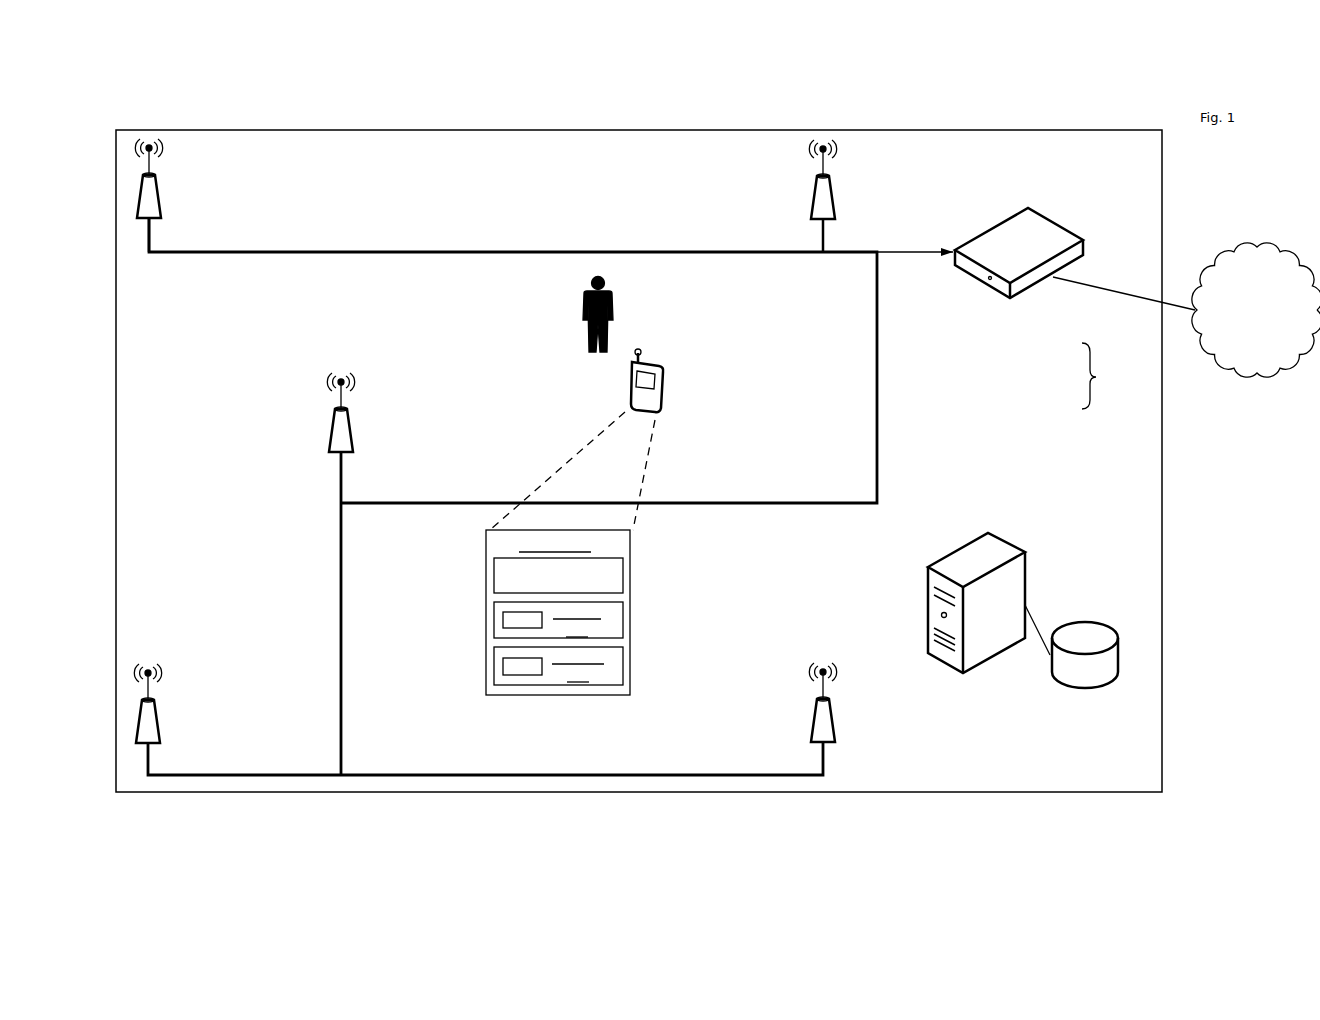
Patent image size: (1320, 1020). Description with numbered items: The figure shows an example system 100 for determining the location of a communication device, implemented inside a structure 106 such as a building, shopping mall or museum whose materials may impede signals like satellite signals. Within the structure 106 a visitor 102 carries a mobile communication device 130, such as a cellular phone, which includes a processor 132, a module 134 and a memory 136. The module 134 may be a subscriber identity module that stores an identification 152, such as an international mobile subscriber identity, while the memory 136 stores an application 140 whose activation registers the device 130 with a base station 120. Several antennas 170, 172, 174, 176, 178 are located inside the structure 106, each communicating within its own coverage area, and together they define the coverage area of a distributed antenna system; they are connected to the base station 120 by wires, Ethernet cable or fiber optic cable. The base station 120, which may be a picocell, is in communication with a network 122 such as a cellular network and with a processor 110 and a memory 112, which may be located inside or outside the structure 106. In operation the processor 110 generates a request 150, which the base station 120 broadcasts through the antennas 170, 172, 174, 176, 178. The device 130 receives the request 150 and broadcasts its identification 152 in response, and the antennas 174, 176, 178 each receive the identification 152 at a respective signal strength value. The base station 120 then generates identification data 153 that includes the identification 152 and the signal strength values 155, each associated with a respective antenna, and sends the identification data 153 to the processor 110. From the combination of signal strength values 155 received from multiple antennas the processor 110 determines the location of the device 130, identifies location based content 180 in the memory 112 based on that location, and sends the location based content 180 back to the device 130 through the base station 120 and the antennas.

The system 100 is at (418, 176).
The visitor 102 is at (578, 320).
The structure 106 is at (1162, 683).
The processor 110 is at (938, 655).
The memory 112 is at (1084, 688).
The base station 120 is at (1062, 230).
The network 122 is at (1186, 310).
The mobile communication device 130 is at (665, 393).
The processor 132 is at (558, 575).
The module 134 is at (558, 620).
The memory 136 is at (558, 666).
The application 140 is at (503, 665).
The request 150 is at (242, 184).
The identification 152 is at (803, 225).
The identification data 153 is at (1097, 370).
The signal strength values 155 is at (1057, 406).
The antenna 170 is at (158, 208).
The antenna 172 is at (160, 735).
The antenna 174 is at (353, 450).
The antenna 176 is at (808, 205).
The antenna 178 is at (811, 731).
The location based content 180 is at (668, 375).